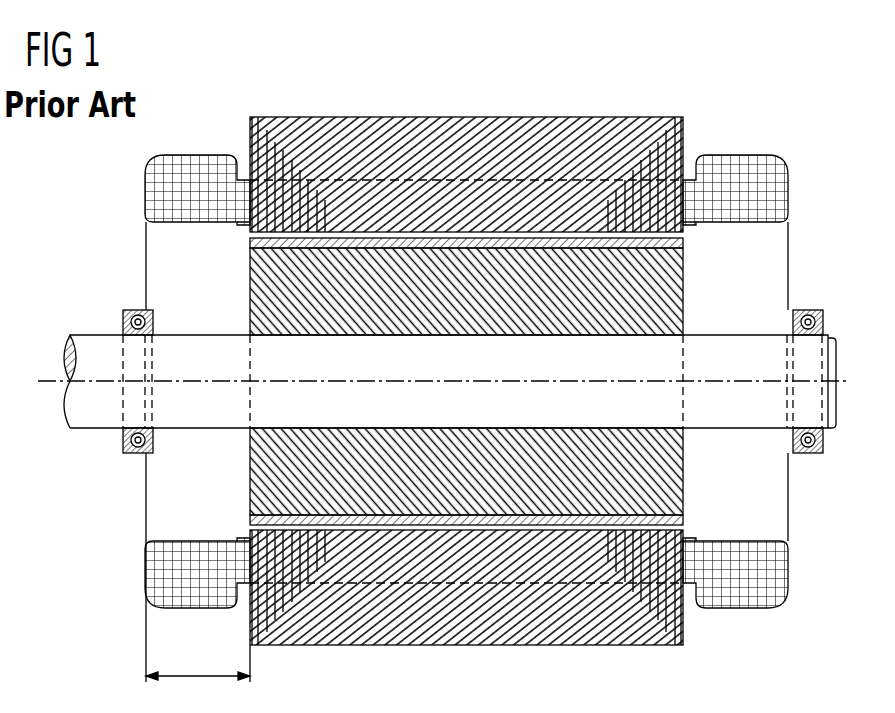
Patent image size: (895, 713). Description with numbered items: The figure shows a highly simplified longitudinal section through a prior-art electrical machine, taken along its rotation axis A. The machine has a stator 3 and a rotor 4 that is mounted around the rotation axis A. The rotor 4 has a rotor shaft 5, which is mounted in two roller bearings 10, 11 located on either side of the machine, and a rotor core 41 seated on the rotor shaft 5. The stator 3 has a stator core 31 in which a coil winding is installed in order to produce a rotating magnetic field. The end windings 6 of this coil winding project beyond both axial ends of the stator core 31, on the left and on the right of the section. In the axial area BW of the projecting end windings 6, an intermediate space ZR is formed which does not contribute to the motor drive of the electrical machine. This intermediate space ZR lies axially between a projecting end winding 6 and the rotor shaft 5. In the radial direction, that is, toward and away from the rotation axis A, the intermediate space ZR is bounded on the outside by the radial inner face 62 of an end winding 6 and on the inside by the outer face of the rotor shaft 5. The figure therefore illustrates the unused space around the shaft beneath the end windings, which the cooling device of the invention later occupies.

The stator 3 is at (517, 122).
The stator core 31 is at (438, 195).
The rotor 4 is at (684, 431).
The rotor core 41 is at (685, 290).
The rotor shaft 5 is at (813, 362).
The end windings 6 is at (157, 186).
The radial inner face 62 is at (195, 224).
The roller bearing 10 is at (136, 454).
The roller bearing 11 is at (805, 455).
The intermediate space ZR is at (150, 278).
The axial area BW is at (198, 663).
The rotation axis A is at (432, 383).